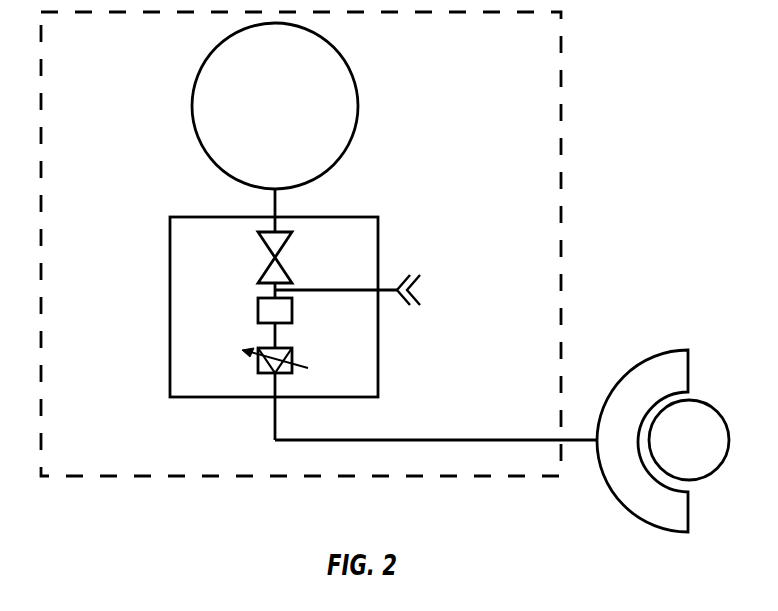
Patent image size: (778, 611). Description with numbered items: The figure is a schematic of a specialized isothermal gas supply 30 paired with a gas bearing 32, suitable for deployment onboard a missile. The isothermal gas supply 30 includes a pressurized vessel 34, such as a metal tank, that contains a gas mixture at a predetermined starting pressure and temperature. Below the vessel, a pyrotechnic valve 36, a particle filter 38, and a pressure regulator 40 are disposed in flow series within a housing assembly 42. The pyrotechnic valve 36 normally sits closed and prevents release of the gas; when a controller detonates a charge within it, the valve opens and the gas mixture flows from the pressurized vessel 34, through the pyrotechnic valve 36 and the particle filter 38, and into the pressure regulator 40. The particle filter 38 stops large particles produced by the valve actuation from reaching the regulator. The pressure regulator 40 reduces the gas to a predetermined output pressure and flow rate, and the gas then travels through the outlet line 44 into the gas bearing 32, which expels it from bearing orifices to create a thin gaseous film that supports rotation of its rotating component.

The isothermal gas supply 30 is at (522, 60).
The gas bearing 32 is at (703, 454).
The pressurized vessel 34 is at (289, 120).
The pyrotechnic valve 36 is at (263, 268).
The particle filter 38 is at (257, 310).
The pressure regulator 40 is at (294, 356).
The housing assembly 42 is at (369, 251).
The outlet line 44 is at (356, 290).